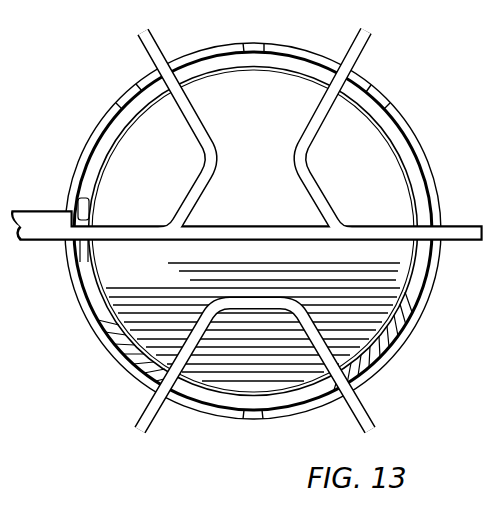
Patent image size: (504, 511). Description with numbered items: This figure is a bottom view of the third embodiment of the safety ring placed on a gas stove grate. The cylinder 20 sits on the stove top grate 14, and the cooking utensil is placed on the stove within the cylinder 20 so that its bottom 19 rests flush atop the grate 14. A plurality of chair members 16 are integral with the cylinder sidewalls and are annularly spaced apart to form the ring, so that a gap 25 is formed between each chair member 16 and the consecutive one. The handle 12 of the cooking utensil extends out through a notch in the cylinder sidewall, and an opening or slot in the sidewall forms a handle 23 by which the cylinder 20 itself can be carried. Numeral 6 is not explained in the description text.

The apparatus 6 is at (3, 445).
The handle 12 is at (13, 211).
The stove top grate 14 is at (357, 50).
The chair members 16 is at (367, 83).
The bottom 19 is at (270, 223).
The cylinder 20 is at (8, 9).
The handle 23 is at (0, 70).
The gap 25 is at (386, 104).